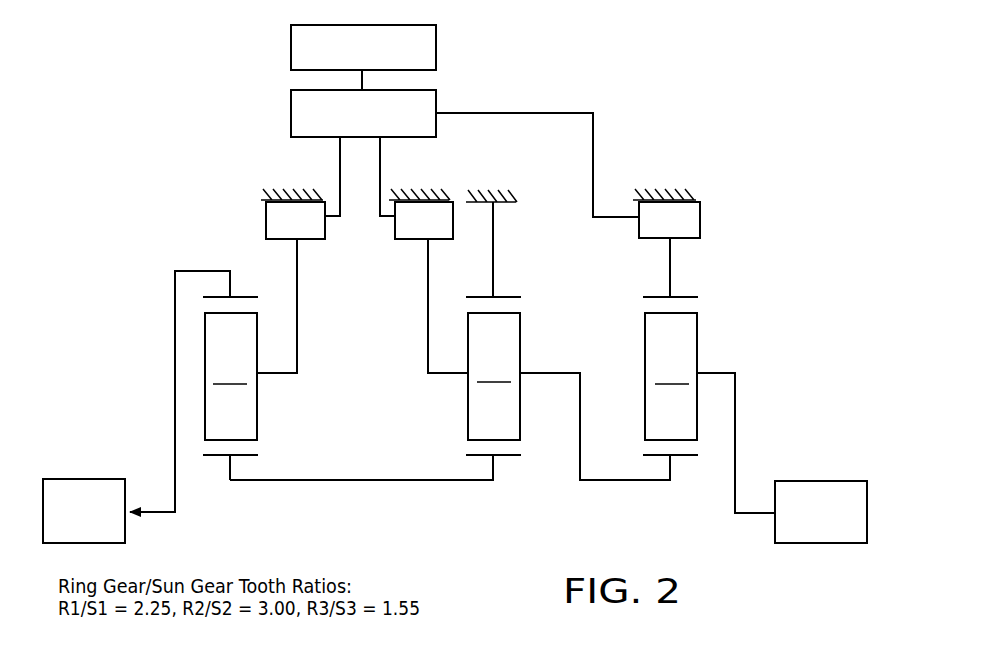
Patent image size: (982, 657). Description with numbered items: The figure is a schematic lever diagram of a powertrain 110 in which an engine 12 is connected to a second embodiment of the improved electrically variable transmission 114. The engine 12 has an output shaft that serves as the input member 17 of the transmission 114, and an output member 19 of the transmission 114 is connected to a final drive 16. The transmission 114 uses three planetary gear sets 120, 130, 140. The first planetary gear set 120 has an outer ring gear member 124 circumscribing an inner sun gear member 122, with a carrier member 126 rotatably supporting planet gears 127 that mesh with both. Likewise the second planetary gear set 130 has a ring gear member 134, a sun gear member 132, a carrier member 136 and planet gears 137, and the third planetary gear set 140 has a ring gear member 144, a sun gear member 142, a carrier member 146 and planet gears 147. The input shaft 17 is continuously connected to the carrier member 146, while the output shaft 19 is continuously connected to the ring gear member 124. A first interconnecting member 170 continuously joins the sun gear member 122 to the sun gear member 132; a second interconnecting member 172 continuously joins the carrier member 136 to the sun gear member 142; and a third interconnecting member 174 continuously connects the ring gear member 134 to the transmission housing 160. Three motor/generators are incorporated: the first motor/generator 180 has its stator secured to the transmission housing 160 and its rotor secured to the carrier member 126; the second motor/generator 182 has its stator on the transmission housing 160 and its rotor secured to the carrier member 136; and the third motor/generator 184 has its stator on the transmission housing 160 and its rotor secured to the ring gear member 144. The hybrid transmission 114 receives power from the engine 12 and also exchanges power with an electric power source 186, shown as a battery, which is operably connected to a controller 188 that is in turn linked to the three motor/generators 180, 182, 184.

The powertrain 110 is at (759, 111).
The electrically variable transmission 114 is at (799, 151).
The engine 12 is at (807, 470).
The final drive 16 is at (109, 461).
The input member 17 is at (750, 514).
The output member 19 is at (150, 513).
The first planetary gear set 120 is at (242, 461).
The sun gear member 122 is at (215, 457).
The ring gear member 124 is at (213, 297).
The carrier member 126 is at (264, 384).
The planet gears 127 is at (231, 376).
The second planetary gear set 130 is at (510, 462).
The sun gear member 132 is at (478, 457).
The ring gear member 134 is at (500, 296).
The carrier member 136 is at (461, 385).
The planet gears 137 is at (494, 376).
The third planetary gear set 140 is at (682, 463).
The sun gear member 142 is at (654, 458).
The ring gear member 144 is at (680, 297).
The carrier member 146 is at (706, 367).
The planet gears 147 is at (671, 376).
The transmission housing 160 is at (300, 190).
The first interconnecting member 170 is at (358, 481).
The second interconnecting member 172 is at (598, 481).
The third interconnecting member 174 is at (494, 233).
The first motor/generator 180 is at (256, 206).
The second motor/generator 182 is at (414, 245).
The third motor/generator 184 is at (706, 207).
The electric power source 186 is at (291, 47).
The controller 188 is at (291, 111).